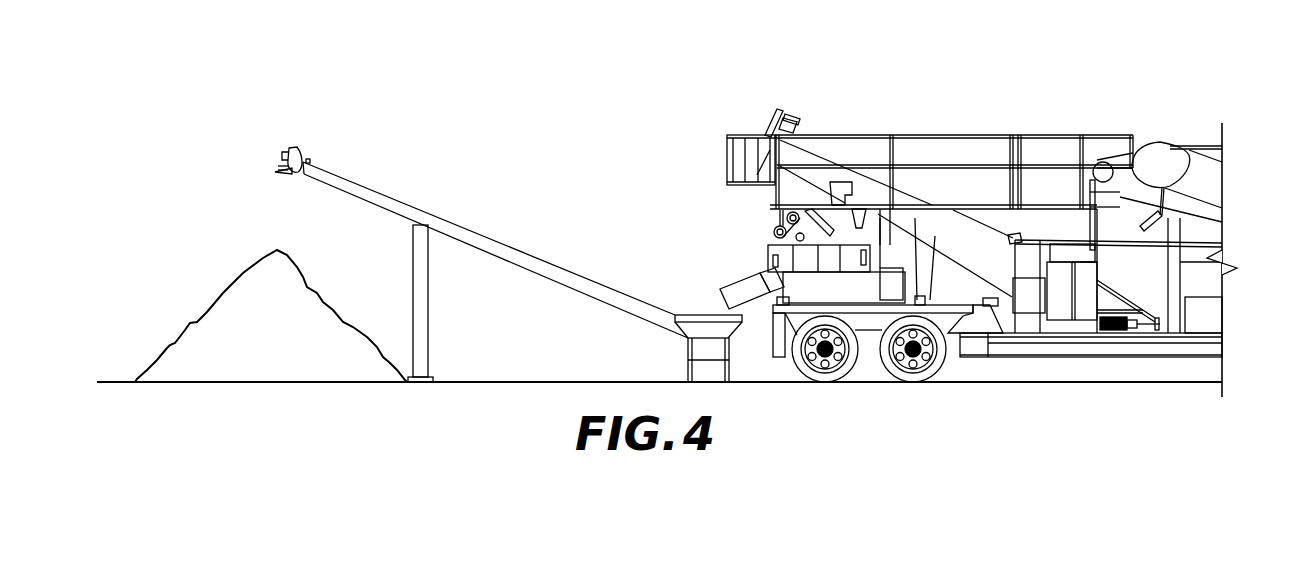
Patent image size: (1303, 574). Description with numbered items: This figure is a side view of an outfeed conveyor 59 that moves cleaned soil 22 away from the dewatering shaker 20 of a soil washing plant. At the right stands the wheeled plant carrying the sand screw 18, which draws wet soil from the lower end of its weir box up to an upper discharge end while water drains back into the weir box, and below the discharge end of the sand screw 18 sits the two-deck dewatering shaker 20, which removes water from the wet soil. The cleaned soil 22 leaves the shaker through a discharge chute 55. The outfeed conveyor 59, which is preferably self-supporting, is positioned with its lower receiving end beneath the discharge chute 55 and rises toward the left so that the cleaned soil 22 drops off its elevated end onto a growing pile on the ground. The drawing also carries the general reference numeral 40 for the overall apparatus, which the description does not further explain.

The sand screw 18 is at (827, 140).
The dewatering shaker 20 is at (766, 252).
The cleaned soil 22 is at (288, 340).
The mobile processing system 40 is at (1168, 109).
The discharge chute 55 is at (733, 290).
The outfeed conveyor 59 is at (490, 236).